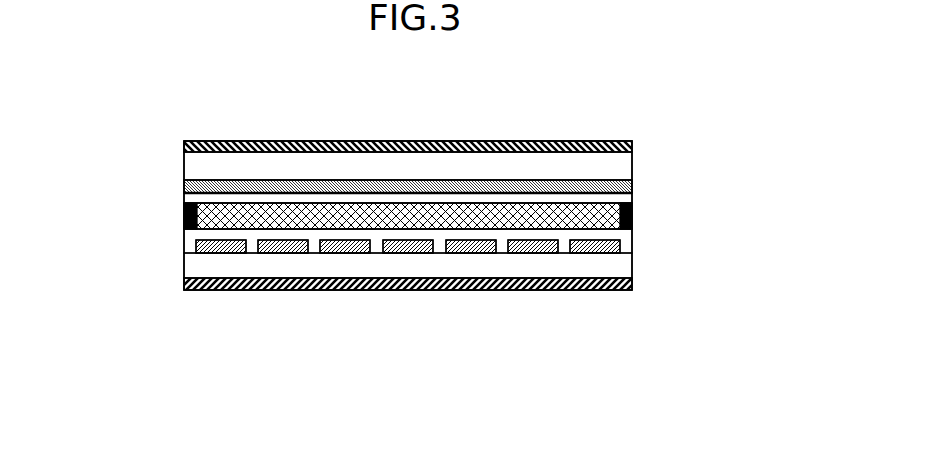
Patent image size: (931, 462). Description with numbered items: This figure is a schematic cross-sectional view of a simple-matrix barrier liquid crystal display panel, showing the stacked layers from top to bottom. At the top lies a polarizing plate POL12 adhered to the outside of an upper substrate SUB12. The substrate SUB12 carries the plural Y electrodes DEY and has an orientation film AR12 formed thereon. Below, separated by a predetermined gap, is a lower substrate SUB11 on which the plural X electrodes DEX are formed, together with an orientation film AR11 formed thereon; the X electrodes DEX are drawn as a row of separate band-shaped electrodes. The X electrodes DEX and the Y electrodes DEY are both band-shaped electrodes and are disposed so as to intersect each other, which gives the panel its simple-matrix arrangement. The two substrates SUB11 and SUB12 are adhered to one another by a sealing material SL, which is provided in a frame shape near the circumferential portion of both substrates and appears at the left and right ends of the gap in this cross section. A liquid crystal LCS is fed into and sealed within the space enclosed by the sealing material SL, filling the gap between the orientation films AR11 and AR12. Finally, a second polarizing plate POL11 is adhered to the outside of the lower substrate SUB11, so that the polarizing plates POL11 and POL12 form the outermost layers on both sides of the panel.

The polarizing plate POL12 is at (543, 142).
The substrate SUB12 is at (630, 168).
The Y electrode DEY is at (300, 181).
The orientation film AR12 is at (398, 197).
The liquid crystal LCS is at (373, 227).
The sealing material SL is at (635, 215).
The orientation film AR11 is at (437, 238).
The X electrode DEX is at (527, 257).
The substrate SUB11 is at (187, 269).
The polarizing plate POL11 is at (285, 292).